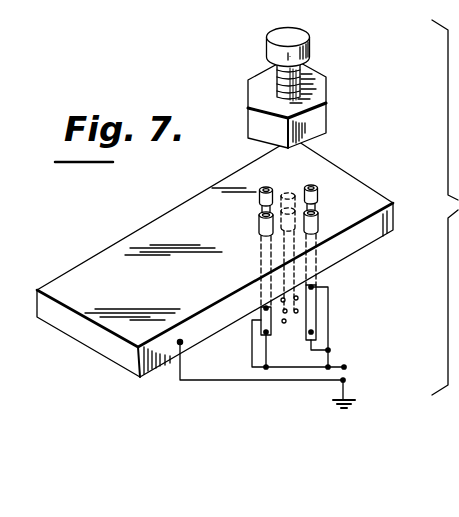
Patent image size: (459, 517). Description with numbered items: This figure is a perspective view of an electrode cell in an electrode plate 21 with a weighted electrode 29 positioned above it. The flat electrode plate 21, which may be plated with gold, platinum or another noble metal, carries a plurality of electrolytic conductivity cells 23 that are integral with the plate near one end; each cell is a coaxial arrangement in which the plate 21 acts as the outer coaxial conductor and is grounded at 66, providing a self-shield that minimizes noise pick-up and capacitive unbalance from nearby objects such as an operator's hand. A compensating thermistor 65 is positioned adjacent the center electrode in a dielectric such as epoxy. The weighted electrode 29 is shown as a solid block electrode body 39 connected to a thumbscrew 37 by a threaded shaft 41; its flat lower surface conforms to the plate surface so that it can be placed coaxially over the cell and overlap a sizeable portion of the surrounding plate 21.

The electrode plate 21 is at (366, 193).
The electrolytic conductivity cells 23 is at (261, 212).
The weighted electrode 29 is at (276, 57).
The thumbscrew 37 is at (281, 40).
The electrode body 39 is at (250, 118).
The threaded shaft 41 is at (305, 70).
The compensating thermistor 65 is at (320, 208).
The ground 66 is at (344, 392).